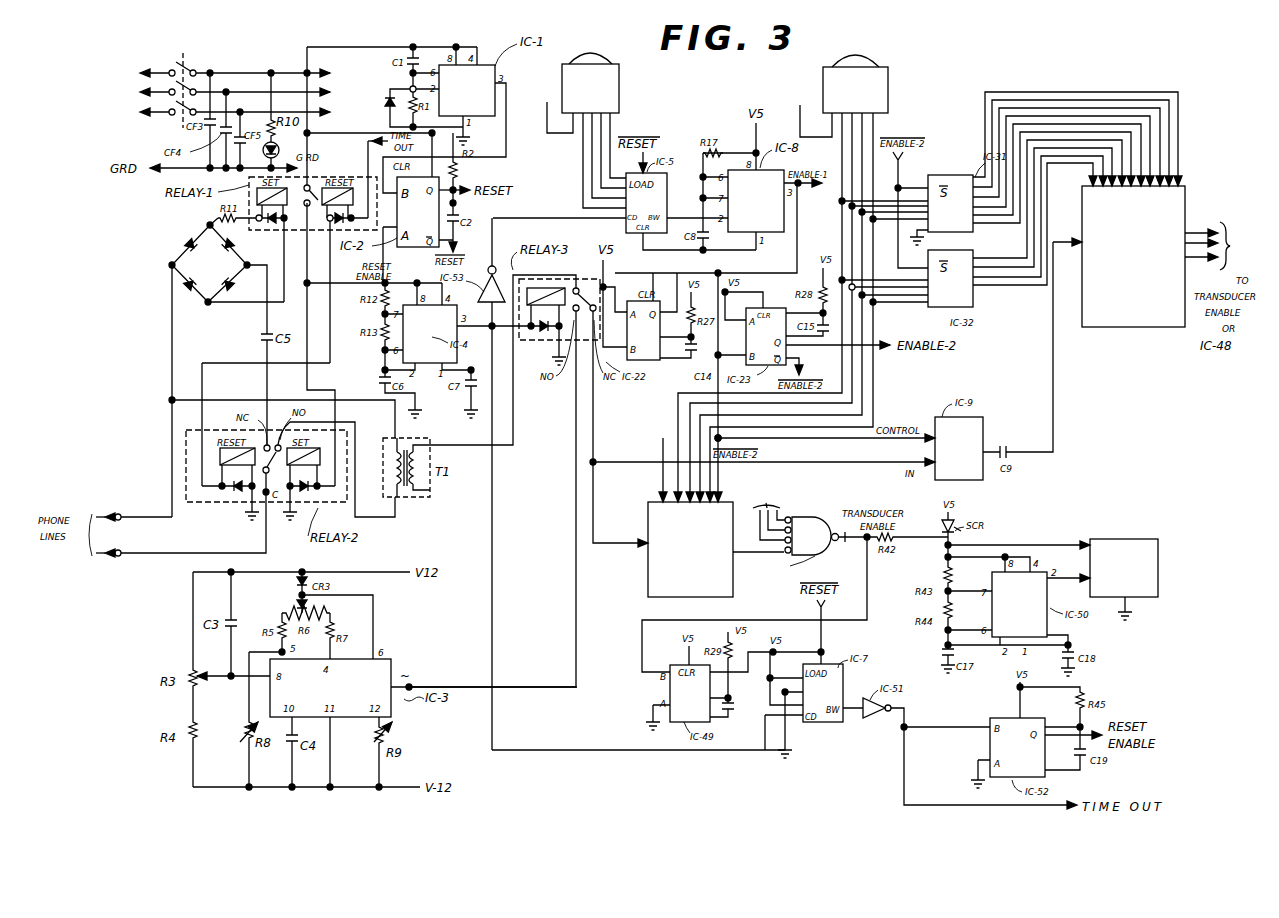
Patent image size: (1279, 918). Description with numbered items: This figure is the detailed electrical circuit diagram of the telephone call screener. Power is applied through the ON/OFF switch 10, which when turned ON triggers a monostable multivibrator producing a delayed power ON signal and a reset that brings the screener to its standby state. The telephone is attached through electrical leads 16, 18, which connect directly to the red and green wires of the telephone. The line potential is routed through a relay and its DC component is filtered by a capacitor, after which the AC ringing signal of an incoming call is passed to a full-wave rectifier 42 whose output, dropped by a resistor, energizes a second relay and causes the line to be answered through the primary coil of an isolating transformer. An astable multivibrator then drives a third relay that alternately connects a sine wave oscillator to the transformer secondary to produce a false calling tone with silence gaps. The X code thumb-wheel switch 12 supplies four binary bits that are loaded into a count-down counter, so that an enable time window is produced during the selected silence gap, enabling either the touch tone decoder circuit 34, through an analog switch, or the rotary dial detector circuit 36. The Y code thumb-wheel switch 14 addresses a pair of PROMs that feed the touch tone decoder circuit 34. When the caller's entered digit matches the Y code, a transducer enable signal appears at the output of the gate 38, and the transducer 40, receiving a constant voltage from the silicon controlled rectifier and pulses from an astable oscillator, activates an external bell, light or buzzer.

The ON/OFF switch 10 is at (188, 58).
The X code thumb-wheel switch 12 is at (587, 56).
The Y code thumb-wheel switch 14 is at (875, 60).
The electrical lead 16 is at (130, 556).
The electrical lead 18 is at (126, 514).
The touch tone decoder circuit 34 is at (1185, 200).
The rotary dial detector circuit 36 is at (648, 574).
The NAND gate IC-48 38 is at (796, 515).
The transducer 40 is at (1132, 539).
The full-wave rectifier 42 is at (176, 232).